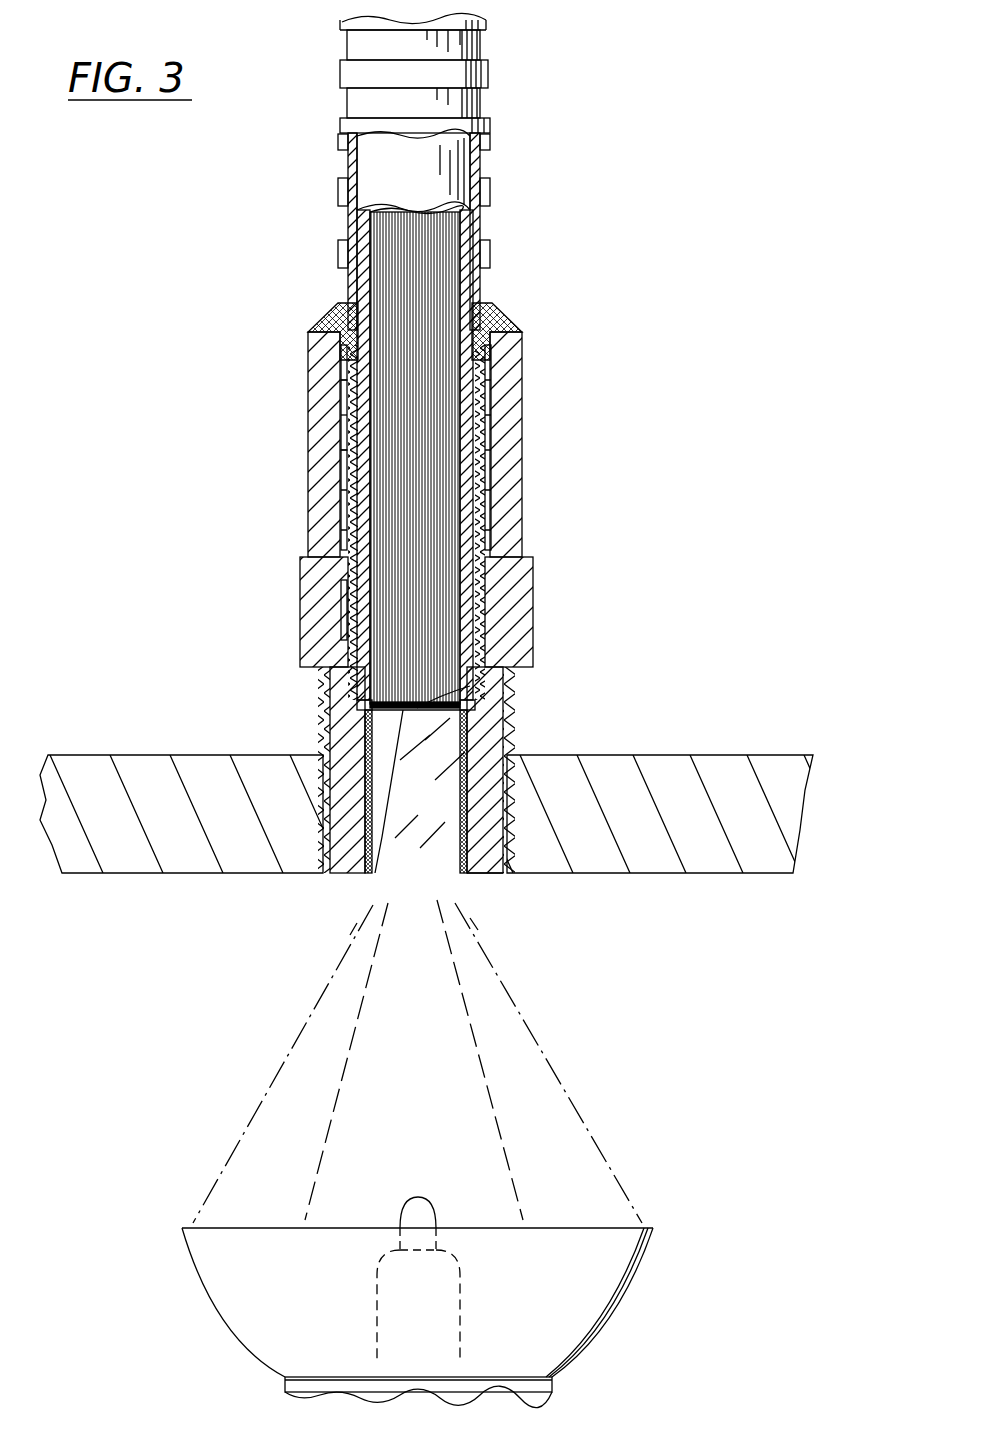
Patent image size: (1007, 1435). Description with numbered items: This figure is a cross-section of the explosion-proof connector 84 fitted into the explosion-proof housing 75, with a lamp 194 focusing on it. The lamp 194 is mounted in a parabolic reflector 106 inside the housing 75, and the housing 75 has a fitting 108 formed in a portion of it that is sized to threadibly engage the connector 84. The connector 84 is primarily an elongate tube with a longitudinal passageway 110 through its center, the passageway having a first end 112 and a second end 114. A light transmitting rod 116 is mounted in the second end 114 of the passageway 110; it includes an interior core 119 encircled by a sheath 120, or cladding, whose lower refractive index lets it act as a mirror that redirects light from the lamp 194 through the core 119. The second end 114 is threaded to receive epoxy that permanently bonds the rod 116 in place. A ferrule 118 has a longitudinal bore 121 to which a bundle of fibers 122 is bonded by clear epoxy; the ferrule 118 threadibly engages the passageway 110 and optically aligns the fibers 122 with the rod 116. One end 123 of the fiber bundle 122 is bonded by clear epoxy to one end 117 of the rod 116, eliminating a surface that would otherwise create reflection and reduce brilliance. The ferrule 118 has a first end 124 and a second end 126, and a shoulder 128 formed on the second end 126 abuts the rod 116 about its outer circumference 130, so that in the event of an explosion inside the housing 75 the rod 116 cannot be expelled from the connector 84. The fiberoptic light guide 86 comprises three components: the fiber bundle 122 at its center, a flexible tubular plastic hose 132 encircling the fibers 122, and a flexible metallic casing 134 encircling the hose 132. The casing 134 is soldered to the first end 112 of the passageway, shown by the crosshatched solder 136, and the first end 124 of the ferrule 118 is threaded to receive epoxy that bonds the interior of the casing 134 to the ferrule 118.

The flexible metallic casing 134 is at (488, 78).
The fiberoptic light guide 86 is at (596, 102).
The tubular plastic hose 132 is at (465, 230).
The bundle of fibers 122 is at (452, 245).
The solder 136 is at (328, 318).
The first end of the passageway 112 is at (510, 345).
The first end of the ferrule 124 is at (362, 336).
The longitudinal bore 121 is at (373, 377).
The ferrule 118 is at (365, 405).
The longitudinal passageway 110 is at (487, 407).
The connector 84 is at (527, 588).
The second end of the ferrule 126 is at (365, 667).
The shoulder 128 is at (345, 722).
The sheath 120 is at (372, 740).
The end of the fiber bundle 123 is at (470, 686).
The outer circumference of the rod 130 is at (472, 703).
The interior core 119 is at (458, 757).
The explosion-proof housing 75 is at (667, 762).
The fitting 108 is at (335, 873).
The end of the rod 117 is at (392, 878).
The light transmitting rod 116 is at (392, 878).
The second end of the passageway 114 is at (480, 865).
The lamp 194 is at (418, 1207).
The parabolic reflector 106 is at (612, 1292).